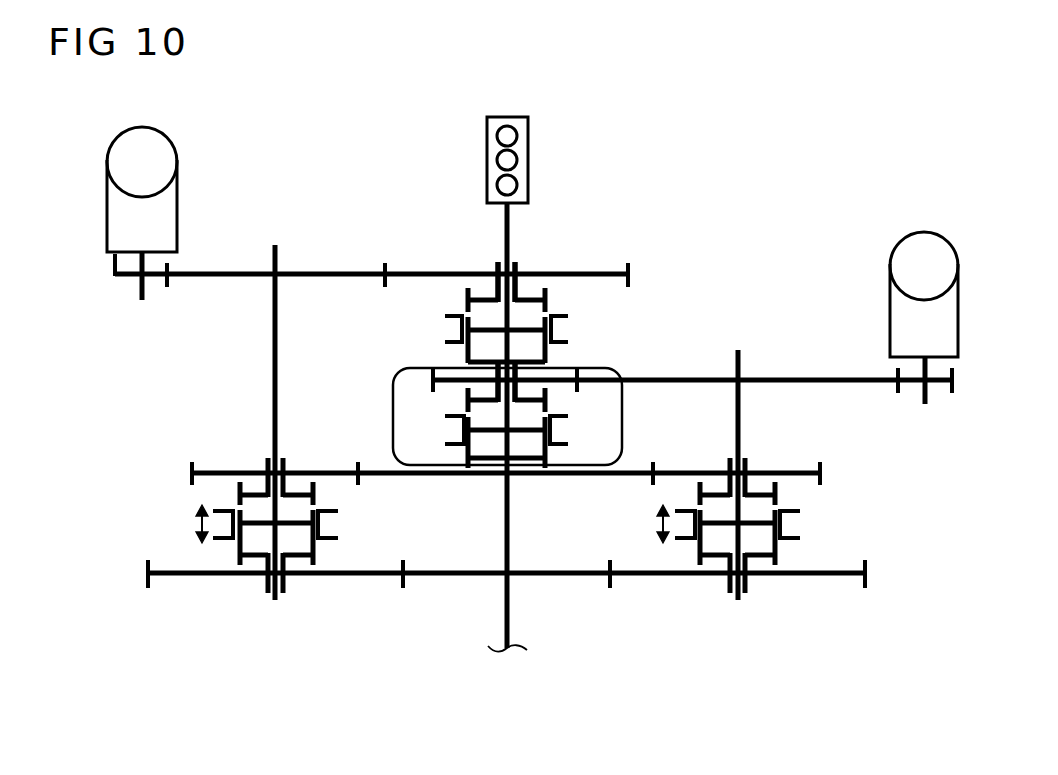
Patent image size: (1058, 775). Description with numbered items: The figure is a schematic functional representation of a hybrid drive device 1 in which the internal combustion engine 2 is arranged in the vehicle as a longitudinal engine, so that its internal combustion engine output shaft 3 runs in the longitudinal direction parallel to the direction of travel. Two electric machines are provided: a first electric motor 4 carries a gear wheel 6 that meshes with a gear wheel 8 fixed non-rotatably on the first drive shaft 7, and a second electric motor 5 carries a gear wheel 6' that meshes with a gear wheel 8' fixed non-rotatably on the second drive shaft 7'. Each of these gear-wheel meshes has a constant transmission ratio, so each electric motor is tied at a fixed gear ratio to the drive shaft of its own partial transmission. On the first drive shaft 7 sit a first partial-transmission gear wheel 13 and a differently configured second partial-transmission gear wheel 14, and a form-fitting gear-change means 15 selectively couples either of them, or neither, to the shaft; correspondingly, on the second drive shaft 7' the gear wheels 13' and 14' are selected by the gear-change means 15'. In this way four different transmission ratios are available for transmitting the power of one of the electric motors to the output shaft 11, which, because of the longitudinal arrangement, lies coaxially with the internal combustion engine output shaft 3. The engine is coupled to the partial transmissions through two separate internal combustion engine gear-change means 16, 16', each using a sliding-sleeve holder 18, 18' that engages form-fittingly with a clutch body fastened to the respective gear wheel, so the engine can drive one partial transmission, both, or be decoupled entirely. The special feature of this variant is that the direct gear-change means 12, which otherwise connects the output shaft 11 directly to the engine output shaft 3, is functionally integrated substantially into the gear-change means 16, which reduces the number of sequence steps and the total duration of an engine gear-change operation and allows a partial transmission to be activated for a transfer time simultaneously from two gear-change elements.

The hybrid drive device 1 is at (199, 523).
The internal combustion engine 2 is at (529, 151).
The internal combustion engine output shaft 3 is at (510, 240).
The first electric motor 4 is at (890, 313).
The second electric motor 5 is at (107, 213).
The gear wheel 6 is at (928, 406).
The gear wheel 6' is at (103, 287).
The first drive shaft 7 is at (751, 442).
The second drive shaft 7' is at (288, 389).
The gear wheel 8 is at (692, 353).
The gear wheel 8' is at (371, 246).
The output shaft 11 is at (506, 616).
The direct gear-change means 12 is at (630, 342).
The first partial-transmission gear wheel 13 is at (703, 455).
The first partial-transmission gear wheel 13' is at (302, 461).
The second partial-transmission gear wheel 14 is at (712, 554).
The second partial-transmission gear wheel 14' is at (313, 604).
The gear-change means 15 is at (779, 525).
The gear-change means 15' is at (199, 525).
The internal combustion engine gear-change means 16 is at (581, 395).
The internal combustion engine gear-change means 16' is at (452, 292).
The sliding-sleeve holder 18 is at (537, 494).
The sliding-sleeve holder 18' is at (482, 271).